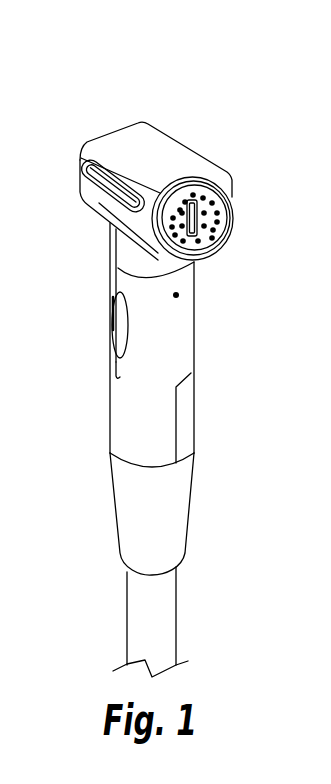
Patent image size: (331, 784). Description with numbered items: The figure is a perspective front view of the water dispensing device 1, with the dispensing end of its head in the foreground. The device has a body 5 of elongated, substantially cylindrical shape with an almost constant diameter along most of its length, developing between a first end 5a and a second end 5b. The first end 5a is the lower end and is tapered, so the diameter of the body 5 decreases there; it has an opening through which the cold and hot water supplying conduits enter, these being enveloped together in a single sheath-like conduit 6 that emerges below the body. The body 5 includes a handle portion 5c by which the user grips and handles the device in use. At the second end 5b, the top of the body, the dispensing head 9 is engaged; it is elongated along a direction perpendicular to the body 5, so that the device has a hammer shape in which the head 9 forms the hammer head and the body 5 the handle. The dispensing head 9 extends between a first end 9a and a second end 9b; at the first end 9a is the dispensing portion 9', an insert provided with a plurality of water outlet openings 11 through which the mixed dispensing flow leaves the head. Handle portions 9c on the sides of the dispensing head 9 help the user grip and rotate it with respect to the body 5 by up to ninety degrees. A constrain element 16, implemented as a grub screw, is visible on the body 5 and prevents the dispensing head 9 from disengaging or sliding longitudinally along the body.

The water dispensing device 1 is at (201, 109).
The body 5 is at (204, 331).
The first end 5a is at (171, 540).
The second end 5b is at (133, 295).
The handle portion 5c is at (125, 334).
The conduit 6 is at (162, 623).
The dispensing head 9 is at (168, 171).
The dispensing portion 9' is at (211, 179).
The first end 9a is at (229, 180).
The second end 9b is at (108, 132).
The handle portion 9c is at (108, 188).
The water outlet openings 11 is at (212, 203).
The constrain element 16 is at (179, 294).